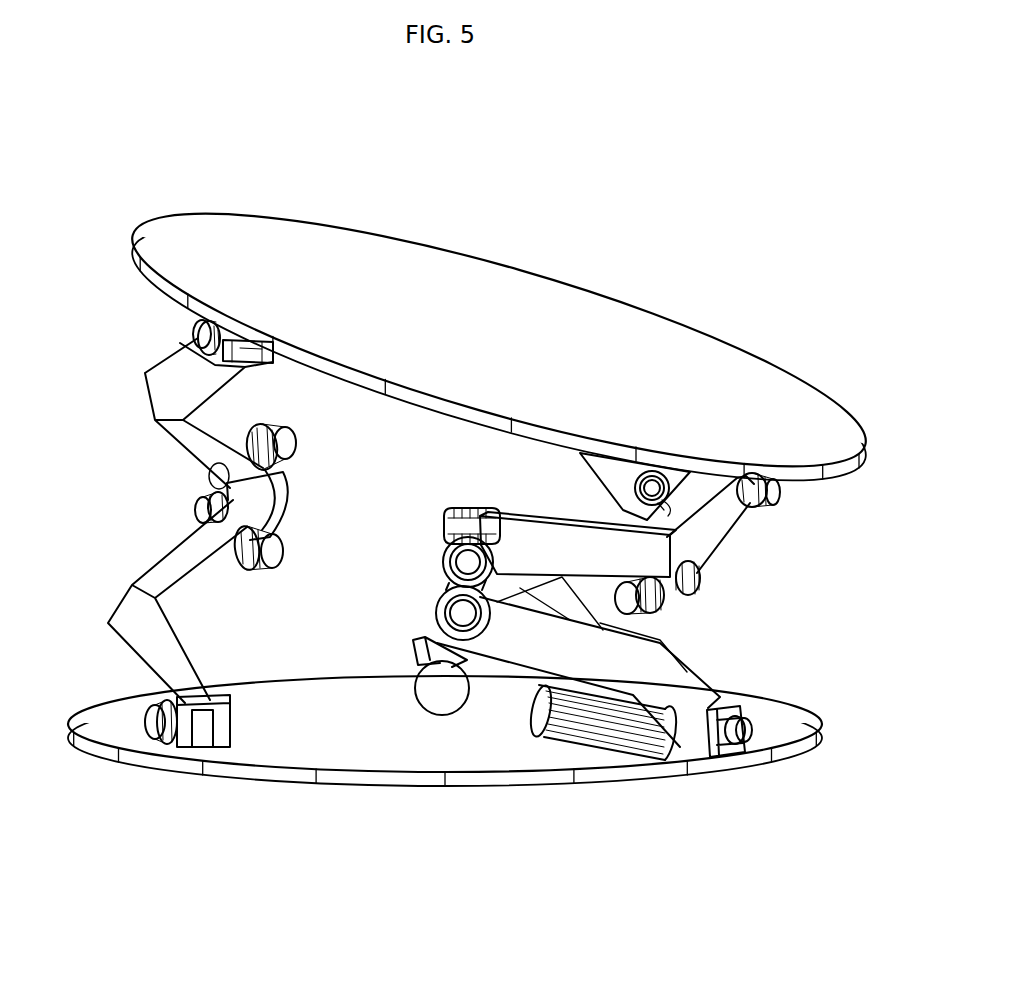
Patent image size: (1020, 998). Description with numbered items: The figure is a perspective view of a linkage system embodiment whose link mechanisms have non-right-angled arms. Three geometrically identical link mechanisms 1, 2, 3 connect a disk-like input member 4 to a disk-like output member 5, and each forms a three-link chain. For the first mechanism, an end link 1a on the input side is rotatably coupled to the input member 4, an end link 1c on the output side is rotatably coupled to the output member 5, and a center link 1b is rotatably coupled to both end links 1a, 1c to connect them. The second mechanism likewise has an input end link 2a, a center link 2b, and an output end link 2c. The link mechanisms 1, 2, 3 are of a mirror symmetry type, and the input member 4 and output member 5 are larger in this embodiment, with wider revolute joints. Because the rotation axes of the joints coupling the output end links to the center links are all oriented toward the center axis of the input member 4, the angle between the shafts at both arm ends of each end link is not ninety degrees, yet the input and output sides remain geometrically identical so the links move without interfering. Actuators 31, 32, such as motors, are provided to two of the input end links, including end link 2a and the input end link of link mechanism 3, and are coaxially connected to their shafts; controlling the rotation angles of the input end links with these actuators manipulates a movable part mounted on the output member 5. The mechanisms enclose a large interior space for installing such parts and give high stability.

The link mechanism 1 is at (148, 515).
The end link 1a is at (135, 647).
The center link 1b is at (262, 500).
The end link 1c is at (158, 393).
The link mechanism 2 is at (737, 672).
The end link 2a is at (590, 667).
The center link 2b is at (458, 592).
The end link 2c is at (543, 522).
The link mechanism 3 is at (716, 566).
The actuator 31 is at (622, 735).
The actuator 32 is at (455, 702).
The input member 4 is at (323, 760).
The output member 5 is at (597, 312).